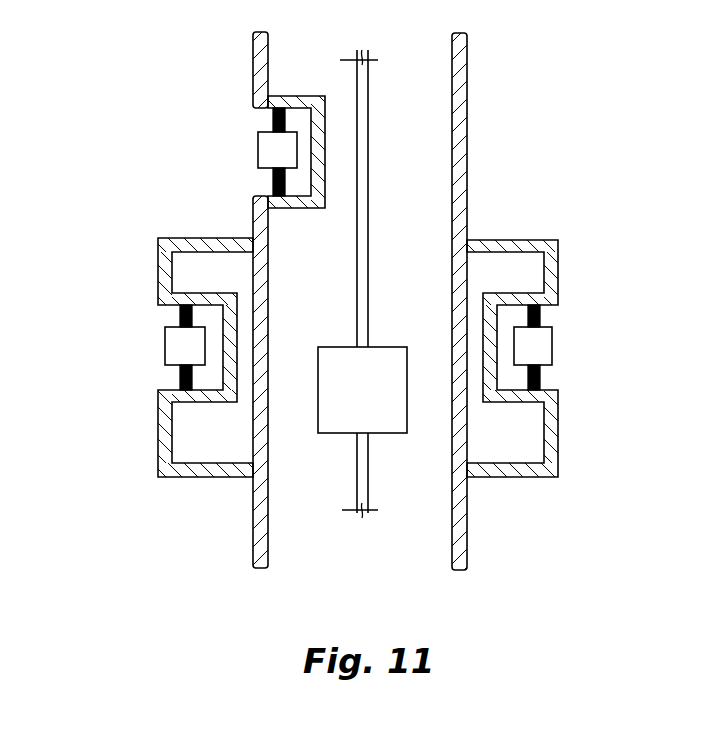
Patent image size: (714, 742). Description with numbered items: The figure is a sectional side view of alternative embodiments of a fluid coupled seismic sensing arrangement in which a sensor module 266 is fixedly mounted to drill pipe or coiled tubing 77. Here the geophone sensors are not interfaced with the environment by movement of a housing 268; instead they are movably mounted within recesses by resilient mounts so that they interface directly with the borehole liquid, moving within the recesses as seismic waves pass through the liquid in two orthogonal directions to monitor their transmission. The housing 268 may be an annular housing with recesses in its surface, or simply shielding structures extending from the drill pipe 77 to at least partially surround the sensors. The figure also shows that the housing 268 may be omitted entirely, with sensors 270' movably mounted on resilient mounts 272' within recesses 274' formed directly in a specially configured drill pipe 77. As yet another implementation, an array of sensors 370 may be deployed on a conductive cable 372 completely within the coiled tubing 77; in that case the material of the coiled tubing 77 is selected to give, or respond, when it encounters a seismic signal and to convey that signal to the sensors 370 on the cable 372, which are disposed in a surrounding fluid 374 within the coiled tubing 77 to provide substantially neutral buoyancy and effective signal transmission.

The drill pipe or coiled tubing 77 is at (468, 87).
The sensor module 266 is at (150, 249).
The housing 268 is at (500, 238).
The sensors 270' is at (217, 132).
The resilient mounts 272' is at (215, 177).
The recesses 274' is at (230, 80).
The sensors 370 is at (340, 398).
The shaft 372 is at (368, 227).
The fluid 374 is at (413, 487).